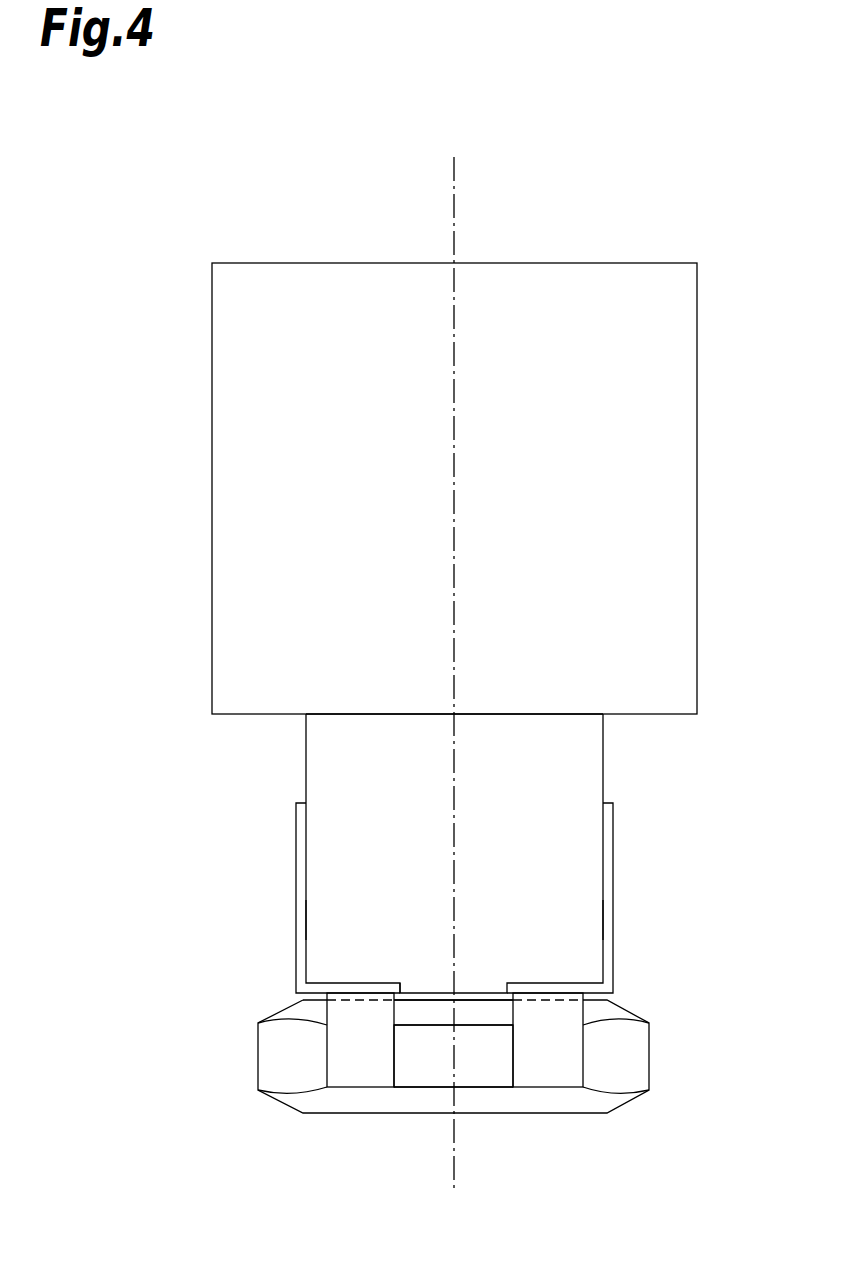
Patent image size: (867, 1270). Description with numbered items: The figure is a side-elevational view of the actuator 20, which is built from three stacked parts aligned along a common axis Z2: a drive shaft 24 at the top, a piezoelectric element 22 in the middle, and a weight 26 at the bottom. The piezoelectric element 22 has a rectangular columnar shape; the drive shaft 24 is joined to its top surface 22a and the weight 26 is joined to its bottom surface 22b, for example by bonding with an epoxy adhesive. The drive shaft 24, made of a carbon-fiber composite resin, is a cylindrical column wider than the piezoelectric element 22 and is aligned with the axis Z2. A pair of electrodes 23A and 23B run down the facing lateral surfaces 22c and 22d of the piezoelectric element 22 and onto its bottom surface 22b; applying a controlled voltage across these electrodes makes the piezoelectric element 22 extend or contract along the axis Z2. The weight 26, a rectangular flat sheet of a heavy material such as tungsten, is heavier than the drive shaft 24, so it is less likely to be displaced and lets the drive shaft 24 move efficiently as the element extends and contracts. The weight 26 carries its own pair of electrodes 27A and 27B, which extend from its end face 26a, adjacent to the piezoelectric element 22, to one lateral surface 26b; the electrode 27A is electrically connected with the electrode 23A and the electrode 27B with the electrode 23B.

The actuator 20 is at (208, 166).
The axis Z2 is at (456, 210).
The drive shaft 24 is at (684, 360).
The piezoelectric element 22 is at (585, 760).
The top surface 22a is at (365, 714).
The bottom surface 22b is at (416, 983).
The lateral surface 22c is at (298, 921).
The lateral surface 22d is at (606, 915).
The electrode 23A is at (296, 851).
The electrode 23B is at (613, 846).
The weight 26 is at (642, 1055).
The end face 26a is at (490, 993).
The lateral surface 26b is at (510, 1070).
The electrode 27A is at (362, 1070).
The electrode 27B is at (552, 1070).